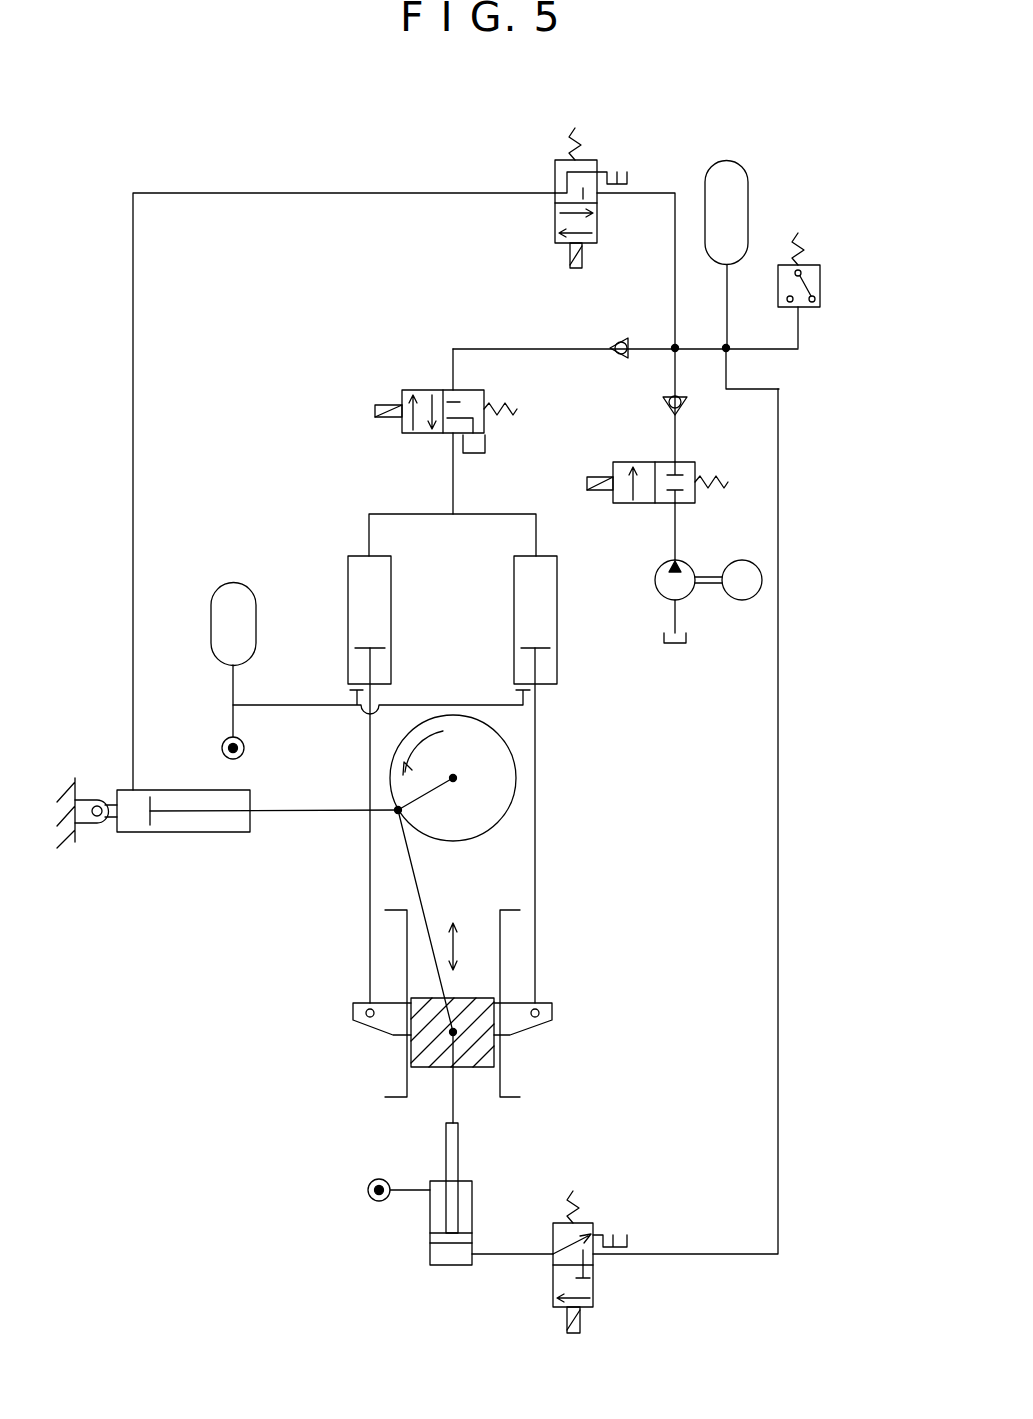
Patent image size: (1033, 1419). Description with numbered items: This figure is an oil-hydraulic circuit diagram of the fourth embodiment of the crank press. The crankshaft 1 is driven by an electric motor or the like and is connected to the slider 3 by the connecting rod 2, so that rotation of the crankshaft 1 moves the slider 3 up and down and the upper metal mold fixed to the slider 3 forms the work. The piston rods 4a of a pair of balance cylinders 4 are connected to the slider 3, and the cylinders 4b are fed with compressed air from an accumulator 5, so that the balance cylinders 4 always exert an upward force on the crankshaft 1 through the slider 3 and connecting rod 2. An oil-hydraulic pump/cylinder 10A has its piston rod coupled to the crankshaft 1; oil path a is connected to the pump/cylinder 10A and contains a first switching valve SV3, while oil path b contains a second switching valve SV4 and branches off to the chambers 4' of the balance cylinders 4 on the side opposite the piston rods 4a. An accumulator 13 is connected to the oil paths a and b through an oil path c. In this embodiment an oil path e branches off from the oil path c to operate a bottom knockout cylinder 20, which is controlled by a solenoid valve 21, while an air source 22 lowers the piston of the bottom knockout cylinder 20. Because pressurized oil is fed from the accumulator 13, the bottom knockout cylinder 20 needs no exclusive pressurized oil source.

The first switching valve SV3 is at (605, 141).
The accumulator 13 is at (748, 184).
The oil path a is at (424, 193).
The oil path b is at (505, 347).
The second switching valve SV4 is at (388, 376).
The oil path c is at (712, 350).
The oil path e is at (778, 735).
The balance cylinders 4 is at (399, 552).
The cylinders 4b is at (348, 590).
The chambers 4' is at (452, 628).
The piston rods 4a is at (370, 733).
The accumulator 5 is at (211, 615).
The crankshaft 1 is at (402, 802).
The oil-hydraulic pump/cylinder 10A is at (165, 833).
The connecting rod 2 is at (412, 860).
The slider 3 is at (425, 1057).
The bottom knockout cylinder 20 is at (430, 1218).
The air source 22 is at (368, 1190).
The solenoid valve 21 is at (617, 1211).